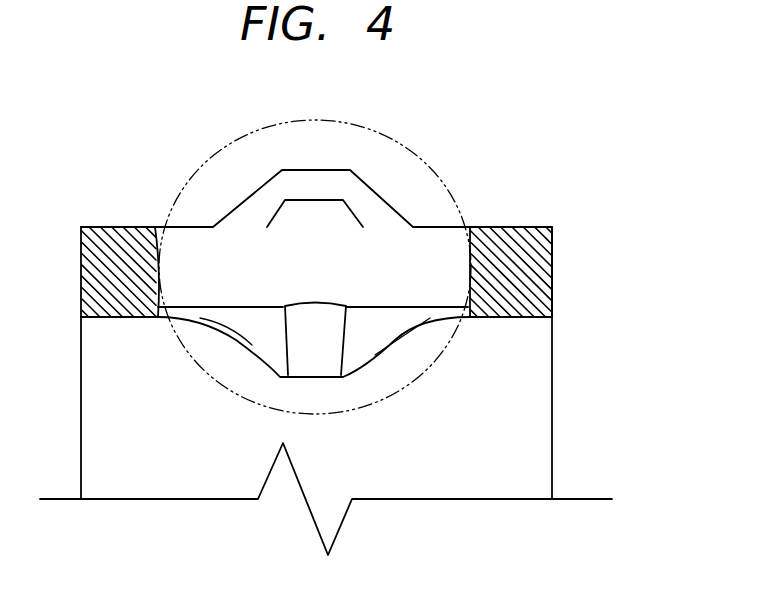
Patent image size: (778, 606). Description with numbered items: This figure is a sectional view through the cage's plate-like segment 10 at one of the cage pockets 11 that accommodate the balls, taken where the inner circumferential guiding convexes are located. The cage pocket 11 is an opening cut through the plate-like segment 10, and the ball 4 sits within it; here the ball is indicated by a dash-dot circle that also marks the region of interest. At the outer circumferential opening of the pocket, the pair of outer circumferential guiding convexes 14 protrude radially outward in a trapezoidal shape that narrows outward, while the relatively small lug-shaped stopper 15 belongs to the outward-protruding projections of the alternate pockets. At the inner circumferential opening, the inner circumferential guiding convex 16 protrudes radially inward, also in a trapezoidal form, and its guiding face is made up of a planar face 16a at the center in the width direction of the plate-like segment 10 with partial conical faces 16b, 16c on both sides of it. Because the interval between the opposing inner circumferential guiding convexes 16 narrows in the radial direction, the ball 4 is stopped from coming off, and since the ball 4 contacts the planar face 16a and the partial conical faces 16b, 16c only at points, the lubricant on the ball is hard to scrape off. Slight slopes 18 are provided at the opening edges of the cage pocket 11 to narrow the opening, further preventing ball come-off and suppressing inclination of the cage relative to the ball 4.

The ball 4 is at (339, 132).
The plate-like segment 10 is at (568, 355).
The cage pocket 11 is at (470, 272).
The outer circumferential guiding convex 14 is at (268, 168).
The stopper 15 is at (341, 205).
The inner circumferential guiding convex 16 is at (381, 378).
The planar face 16a is at (313, 360).
The partial conical face 16b is at (255, 330).
The partial conical face 16c is at (377, 338).
The slight slope 18 is at (178, 310).